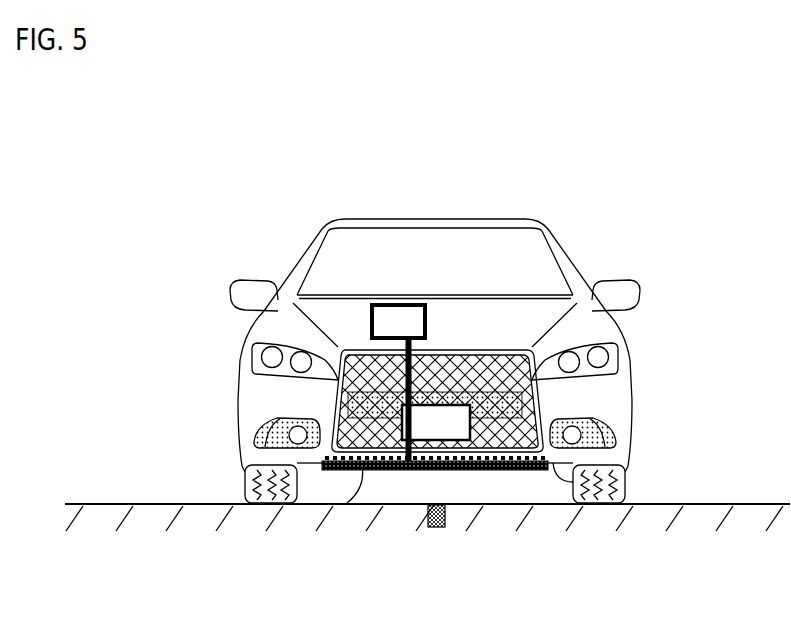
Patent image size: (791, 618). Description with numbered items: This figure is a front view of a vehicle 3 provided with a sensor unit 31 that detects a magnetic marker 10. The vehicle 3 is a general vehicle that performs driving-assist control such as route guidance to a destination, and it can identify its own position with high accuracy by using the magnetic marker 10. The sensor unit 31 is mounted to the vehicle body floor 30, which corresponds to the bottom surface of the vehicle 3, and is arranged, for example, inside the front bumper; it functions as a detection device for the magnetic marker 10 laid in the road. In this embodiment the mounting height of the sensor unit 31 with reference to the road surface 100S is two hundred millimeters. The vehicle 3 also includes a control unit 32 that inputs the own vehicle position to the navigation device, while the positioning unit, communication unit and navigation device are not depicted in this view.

The vehicle 3 is at (592, 252).
The magnetic marker 10 is at (447, 519).
The vehicle body floor 30 is at (601, 475).
The sensor unit 31 is at (360, 471).
The control unit 32 is at (390, 315).
The road surface 100S is at (150, 503).